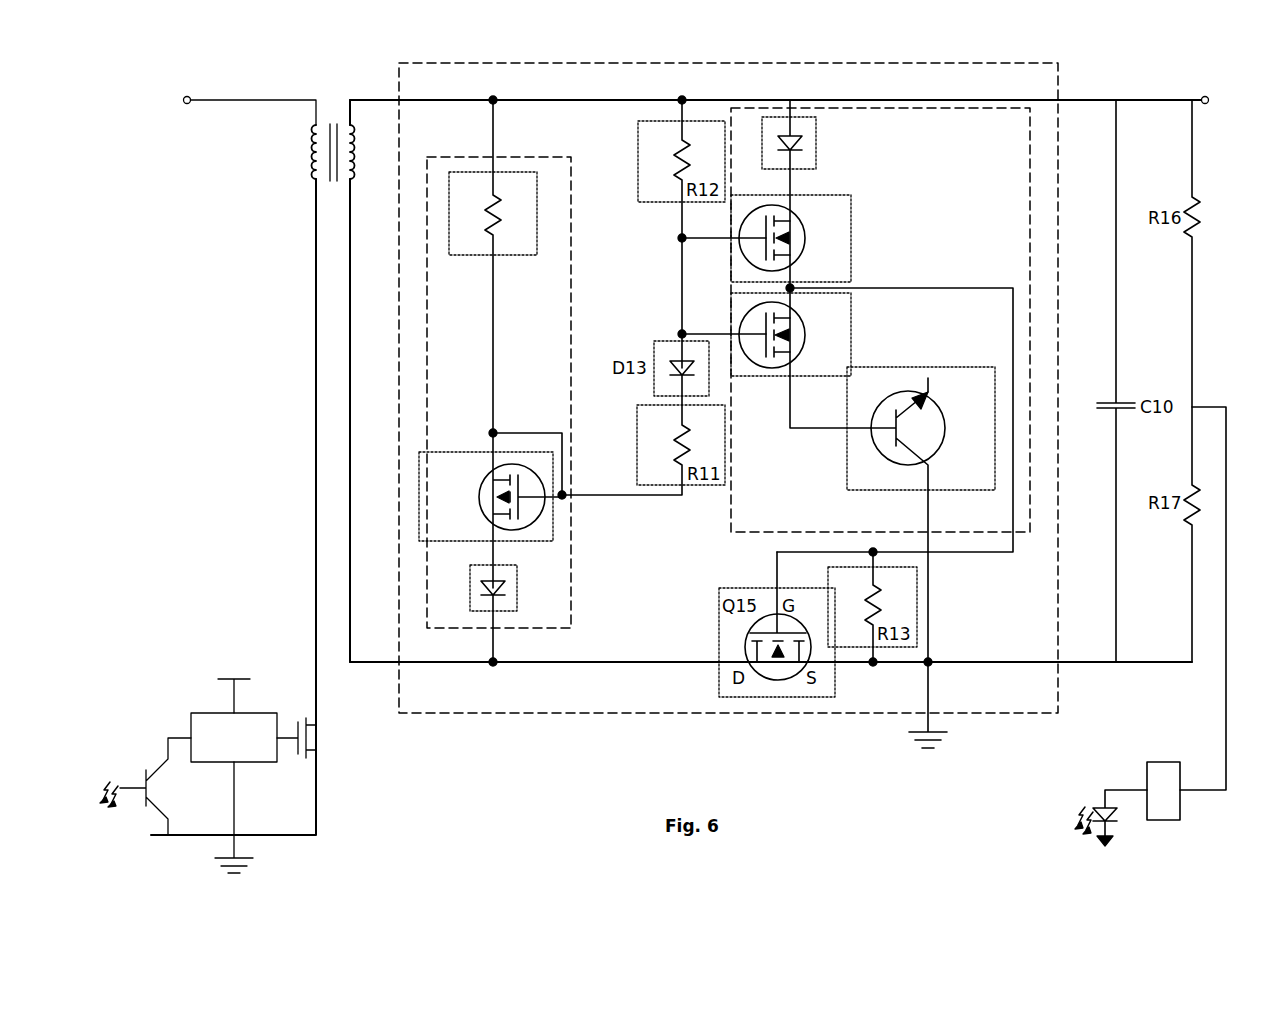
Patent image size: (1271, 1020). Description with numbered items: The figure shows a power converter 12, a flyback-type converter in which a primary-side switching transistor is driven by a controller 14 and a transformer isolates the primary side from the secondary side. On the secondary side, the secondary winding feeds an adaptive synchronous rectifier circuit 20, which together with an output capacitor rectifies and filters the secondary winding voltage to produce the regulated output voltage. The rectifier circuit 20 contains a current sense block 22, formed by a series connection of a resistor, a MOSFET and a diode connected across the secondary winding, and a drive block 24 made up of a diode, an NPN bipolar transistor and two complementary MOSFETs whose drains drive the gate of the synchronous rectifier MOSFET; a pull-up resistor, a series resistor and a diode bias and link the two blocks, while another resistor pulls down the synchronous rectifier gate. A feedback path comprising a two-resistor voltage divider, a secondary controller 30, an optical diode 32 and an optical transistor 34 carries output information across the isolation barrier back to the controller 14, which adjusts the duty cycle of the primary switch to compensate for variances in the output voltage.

The power converter 12 is at (434, 773).
The controller 14 is at (265, 713).
The adaptive synchronous rectifier circuit 20 is at (1003, 713).
The current sense block 22 is at (548, 158).
The drive block 24 is at (1030, 165).
The secondary controller 30 is at (1165, 762).
The optical diode 32 is at (1098, 790).
The optical transistor 34 is at (150, 758).